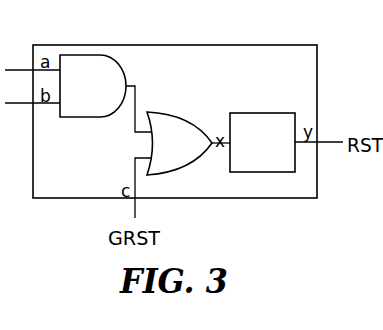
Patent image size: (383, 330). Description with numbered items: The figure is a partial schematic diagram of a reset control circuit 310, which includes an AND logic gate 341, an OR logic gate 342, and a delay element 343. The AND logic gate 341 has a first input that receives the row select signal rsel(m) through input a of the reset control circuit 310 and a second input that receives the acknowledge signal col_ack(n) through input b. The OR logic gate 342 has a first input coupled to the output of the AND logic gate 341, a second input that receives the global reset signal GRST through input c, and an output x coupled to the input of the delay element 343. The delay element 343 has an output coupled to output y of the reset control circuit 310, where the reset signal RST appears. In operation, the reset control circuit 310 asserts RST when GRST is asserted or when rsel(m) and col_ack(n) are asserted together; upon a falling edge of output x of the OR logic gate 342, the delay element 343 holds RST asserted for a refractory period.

The reset control circuit 310 is at (288, 45).
The AND logic gate 341 is at (103, 118).
The OR logic gate 342 is at (172, 112).
The delay element 343 is at (267, 113).